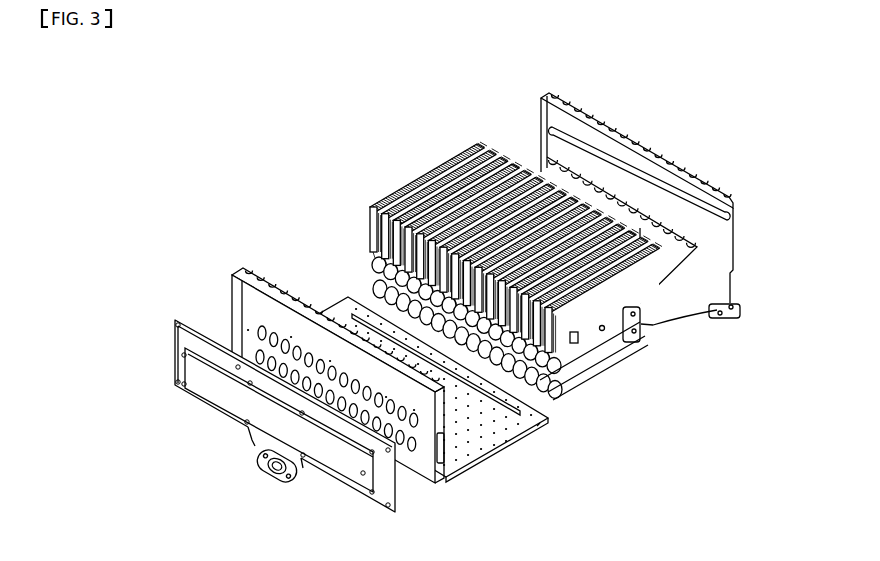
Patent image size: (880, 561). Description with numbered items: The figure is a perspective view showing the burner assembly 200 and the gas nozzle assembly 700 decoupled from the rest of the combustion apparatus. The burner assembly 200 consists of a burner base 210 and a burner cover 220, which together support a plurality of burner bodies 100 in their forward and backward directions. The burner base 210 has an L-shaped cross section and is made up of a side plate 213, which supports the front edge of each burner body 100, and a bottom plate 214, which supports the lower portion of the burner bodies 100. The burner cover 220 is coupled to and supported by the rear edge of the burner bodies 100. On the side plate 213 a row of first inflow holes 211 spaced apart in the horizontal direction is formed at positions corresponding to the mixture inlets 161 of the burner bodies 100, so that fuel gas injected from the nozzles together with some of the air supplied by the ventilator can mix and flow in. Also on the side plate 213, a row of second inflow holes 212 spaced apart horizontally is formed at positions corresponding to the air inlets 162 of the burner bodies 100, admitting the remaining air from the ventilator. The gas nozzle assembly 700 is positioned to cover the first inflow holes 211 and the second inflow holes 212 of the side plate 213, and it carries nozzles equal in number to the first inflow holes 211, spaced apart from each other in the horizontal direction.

The burner body 100 is at (370, 207).
The mixture inlet 161 is at (573, 373).
The air inlet 162 is at (557, 388).
The burner assembly 200 is at (486, 321).
The burner base 210 is at (262, 265).
The first inflow hole 211 is at (447, 473).
The second inflow hole 212 is at (417, 457).
The side plate 213 is at (430, 465).
The bottom plate 214 is at (513, 432).
The burner cover 220 is at (538, 106).
The gas nozzle assembly 700 is at (181, 343).